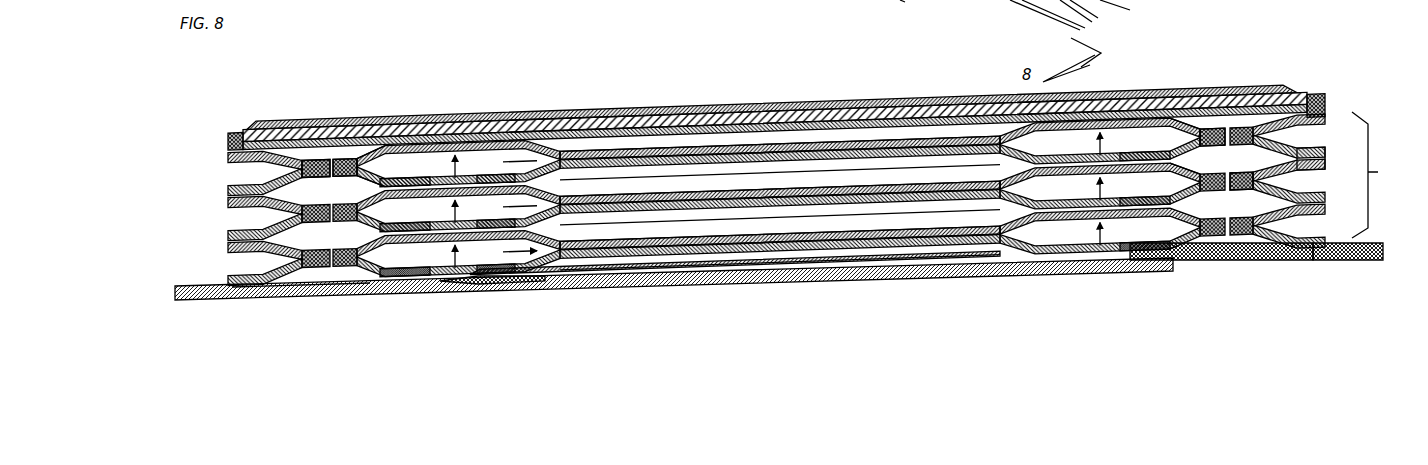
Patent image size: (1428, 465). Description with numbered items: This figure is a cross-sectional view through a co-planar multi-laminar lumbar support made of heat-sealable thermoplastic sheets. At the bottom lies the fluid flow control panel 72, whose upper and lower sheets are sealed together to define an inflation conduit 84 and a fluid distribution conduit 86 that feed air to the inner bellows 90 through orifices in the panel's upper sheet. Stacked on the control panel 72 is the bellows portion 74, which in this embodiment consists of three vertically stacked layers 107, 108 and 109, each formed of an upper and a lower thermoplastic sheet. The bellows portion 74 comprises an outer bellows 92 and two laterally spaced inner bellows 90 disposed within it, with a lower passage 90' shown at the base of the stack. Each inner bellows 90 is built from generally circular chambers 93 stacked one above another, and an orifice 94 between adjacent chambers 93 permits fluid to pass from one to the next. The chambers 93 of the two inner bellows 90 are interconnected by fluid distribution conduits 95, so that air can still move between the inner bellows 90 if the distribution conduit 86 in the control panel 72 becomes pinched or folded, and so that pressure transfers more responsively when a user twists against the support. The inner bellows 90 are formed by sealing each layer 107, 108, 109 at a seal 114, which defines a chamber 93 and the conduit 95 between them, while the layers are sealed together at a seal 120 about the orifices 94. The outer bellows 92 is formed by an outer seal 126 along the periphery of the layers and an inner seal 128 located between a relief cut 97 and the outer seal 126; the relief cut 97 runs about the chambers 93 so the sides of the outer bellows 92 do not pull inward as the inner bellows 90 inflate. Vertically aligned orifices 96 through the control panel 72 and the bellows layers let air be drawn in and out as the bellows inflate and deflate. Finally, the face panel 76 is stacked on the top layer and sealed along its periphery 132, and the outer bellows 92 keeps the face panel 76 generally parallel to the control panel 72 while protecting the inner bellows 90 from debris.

The fluid flow control panel 72 is at (1386, 247).
The bellows portion 74 is at (1375, 175).
The face panel 76 is at (1252, 100).
The inflation conduit 84 is at (475, 283).
The fluid distribution conduit 86 is at (690, 273).
The inner bellows 90 is at (788, 224).
The lower passage plate 90' is at (1221, 265).
The outer bellows 92 is at (1125, 3).
The chamber 93 is at (372, 157).
The orifice 94 is at (456, 181).
The fluid distribution conduit 95 is at (790, 142).
The vertically aligned orifice 96 is at (892, 5).
The relief cut 97 is at (315, 148).
The first layer 107 is at (222, 152).
The second layer 108 is at (222, 198).
The third layer 109 is at (222, 244).
The seal 114 is at (350, 160).
The seal 120 is at (409, 181).
The outer seal 126 is at (1325, 157).
The inner seal 128 is at (1252, 190).
The periphery seal 132 is at (233, 132).